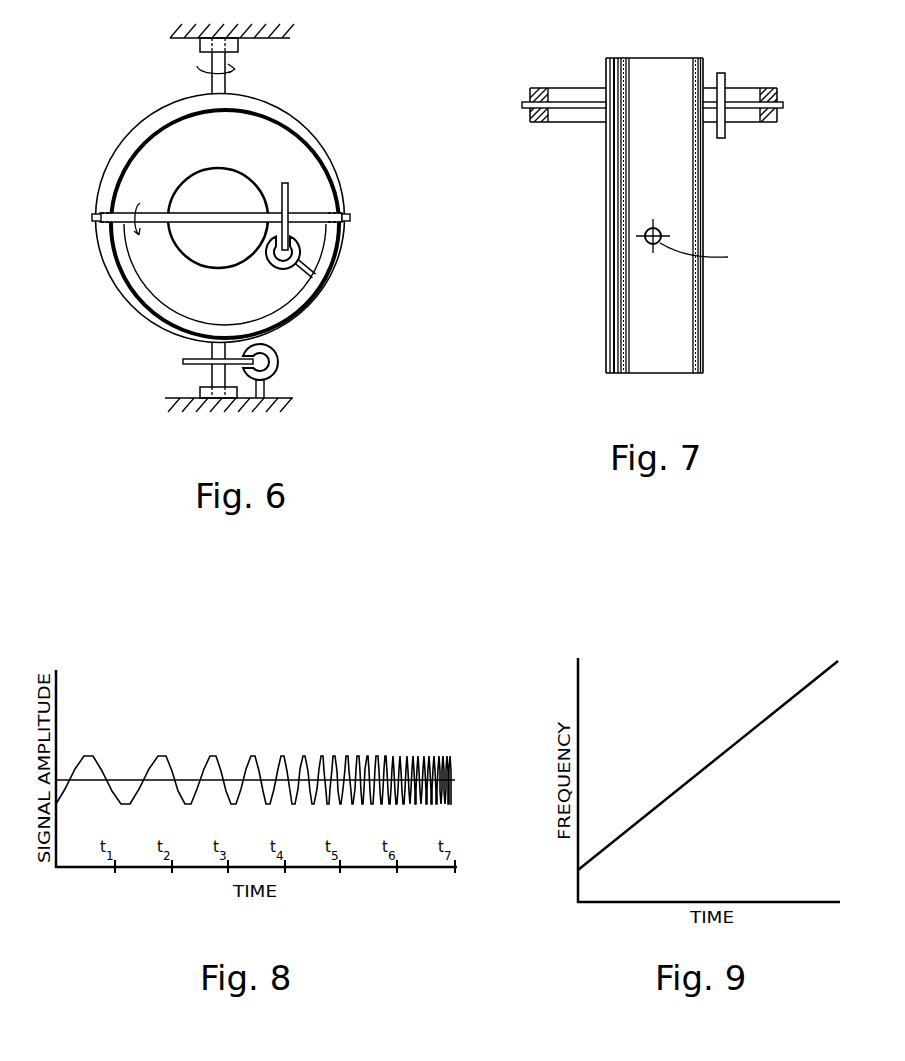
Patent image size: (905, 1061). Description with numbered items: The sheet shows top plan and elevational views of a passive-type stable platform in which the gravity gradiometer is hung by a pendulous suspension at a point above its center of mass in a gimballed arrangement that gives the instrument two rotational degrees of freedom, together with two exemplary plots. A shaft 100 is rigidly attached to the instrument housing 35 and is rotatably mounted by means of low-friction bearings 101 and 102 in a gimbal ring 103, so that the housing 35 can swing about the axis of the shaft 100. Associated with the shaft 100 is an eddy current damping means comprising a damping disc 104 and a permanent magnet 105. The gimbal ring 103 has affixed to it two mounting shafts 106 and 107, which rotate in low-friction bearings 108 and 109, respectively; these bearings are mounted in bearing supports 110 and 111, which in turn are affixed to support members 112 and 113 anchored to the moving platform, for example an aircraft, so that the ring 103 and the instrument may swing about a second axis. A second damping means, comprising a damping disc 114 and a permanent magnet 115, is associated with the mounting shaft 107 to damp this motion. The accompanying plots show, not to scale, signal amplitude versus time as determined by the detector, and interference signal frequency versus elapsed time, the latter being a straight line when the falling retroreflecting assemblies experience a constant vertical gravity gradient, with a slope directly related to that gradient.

In FIG. 7, the instrument housing 35 is at (676, 208).
In FIG. 6, the shaft 100 is at (310, 216).
In FIG. 7, the shaft 100 is at (559, 100).
In FIG. 6, the low-friction bearing 101 is at (340, 224).
In FIG. 7, the low-friction bearing 101 is at (781, 96).
In FIG. 6, the low-friction bearing 102 is at (96, 212).
In FIG. 7, the low-friction bearing 102 is at (530, 101).
In FIG. 6, the gimbal ring 103 is at (278, 321).
In FIG. 7, the gimbal ring 103 is at (774, 123).
In FIG. 6, the damping disc 104 is at (288, 192).
In FIG. 7, the damping disc 104 is at (727, 86).
In FIG. 6, the permanent magnet 105 is at (283, 270).
In FIG. 6, the mounting shaft 106 is at (227, 78).
In FIG. 6, the mounting shaft 107 is at (211, 350).
In FIG. 6, the low-friction bearing 108 is at (238, 45).
In FIG. 6, the low-friction bearing 109 is at (196, 388).
In FIG. 6, the bearing support 110 is at (240, 48).
In FIG. 6, the bearing support 111 is at (228, 399).
In FIG. 6, the support member 112 is at (277, 31).
In FIG. 6, the support member 113 is at (262, 399).
In FIG. 6, the damping disc 114 is at (196, 363).
In FIG. 6, the permanent magnet 115 is at (276, 368).